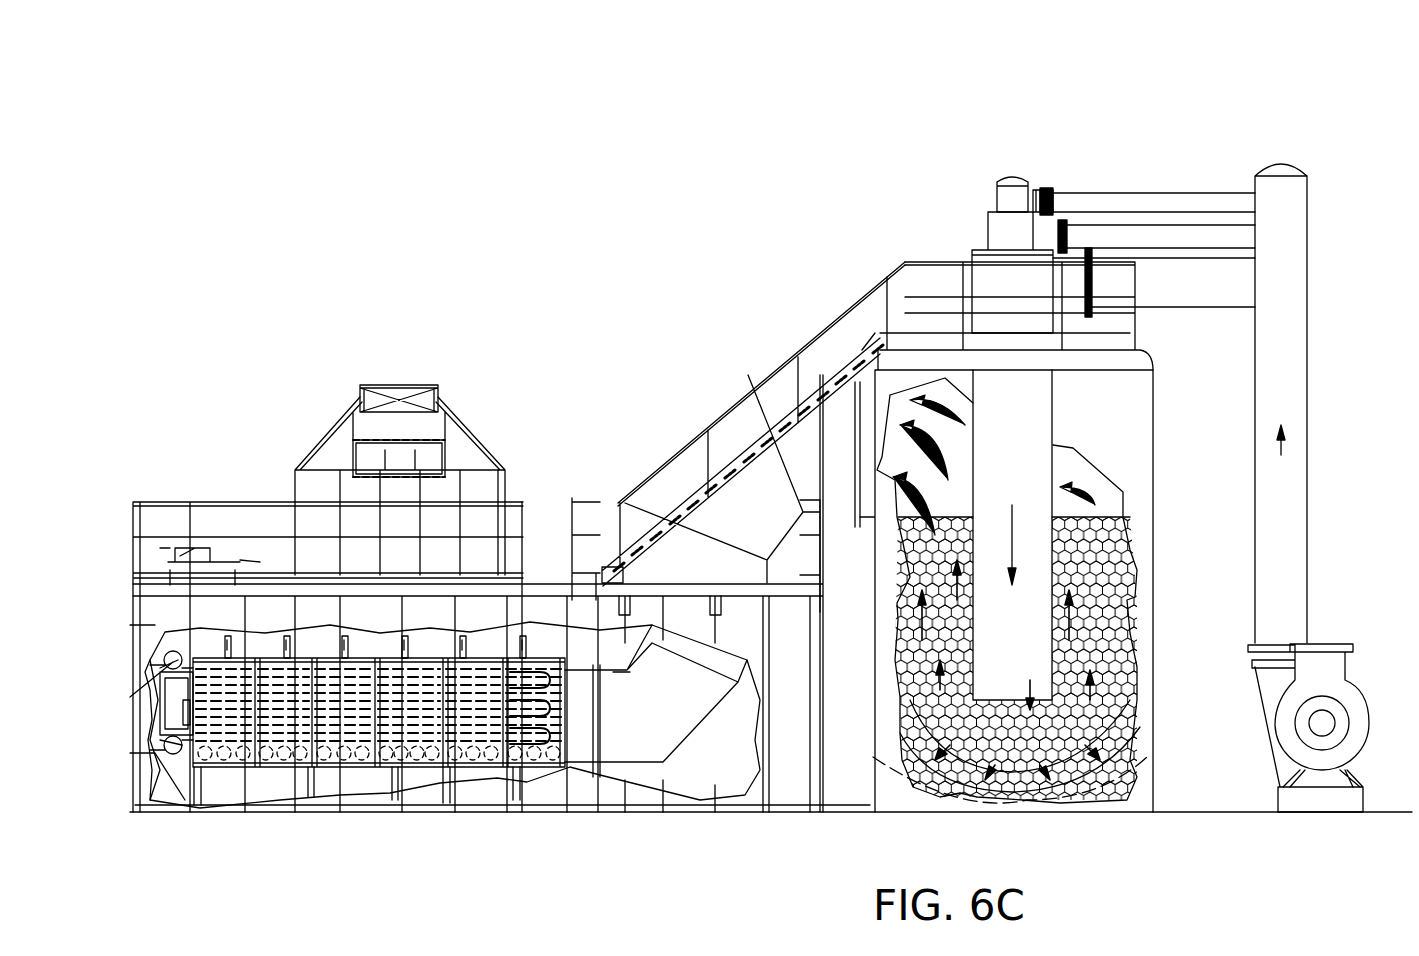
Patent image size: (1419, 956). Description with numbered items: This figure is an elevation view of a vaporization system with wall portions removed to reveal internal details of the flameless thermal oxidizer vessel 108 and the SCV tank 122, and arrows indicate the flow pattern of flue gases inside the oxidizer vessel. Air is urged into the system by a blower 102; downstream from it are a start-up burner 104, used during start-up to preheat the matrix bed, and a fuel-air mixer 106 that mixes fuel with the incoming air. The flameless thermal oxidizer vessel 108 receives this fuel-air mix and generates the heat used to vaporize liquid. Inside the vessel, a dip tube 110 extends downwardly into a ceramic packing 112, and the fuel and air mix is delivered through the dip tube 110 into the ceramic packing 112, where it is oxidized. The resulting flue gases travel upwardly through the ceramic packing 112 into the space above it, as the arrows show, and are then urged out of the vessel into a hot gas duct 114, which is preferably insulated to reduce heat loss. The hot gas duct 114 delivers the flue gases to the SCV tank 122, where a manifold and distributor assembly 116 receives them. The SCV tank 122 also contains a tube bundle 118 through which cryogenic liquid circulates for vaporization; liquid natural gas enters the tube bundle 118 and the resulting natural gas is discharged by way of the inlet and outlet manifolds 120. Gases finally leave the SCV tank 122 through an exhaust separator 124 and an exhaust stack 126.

The blower 102 is at (1367, 727).
The start-up burner 104 is at (1012, 178).
The fuel-air mixer 106 is at (985, 232).
The flameless thermal oxidizer vessel 108 is at (1152, 440).
The dip tube 110 is at (1053, 463).
The ceramic packing 112 is at (937, 537).
The hot gas duct 114 is at (740, 395).
The manifold and distributor assembly 116 is at (575, 757).
The tube bundle 118 is at (230, 738).
The inlet and outlet manifolds 120 is at (185, 800).
The SCV tank 122 is at (125, 620).
The exhaust separator 124 is at (483, 440).
The exhaust stack 126 is at (420, 385).